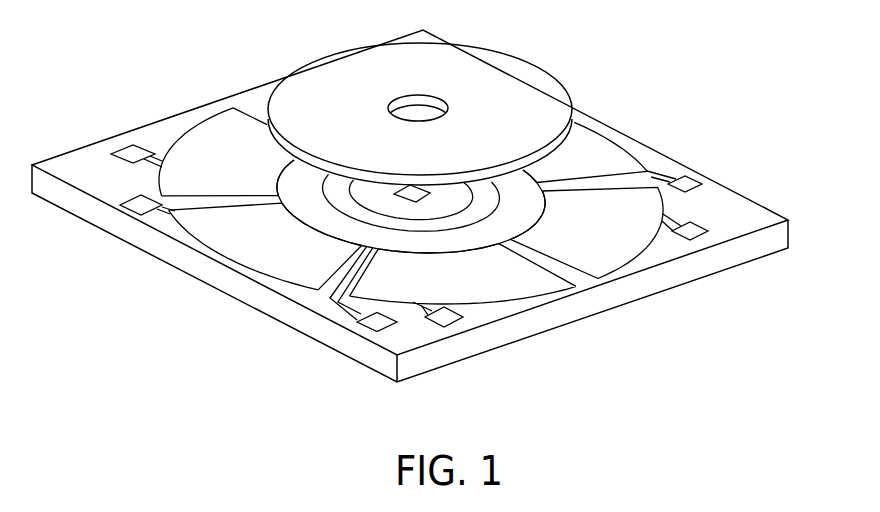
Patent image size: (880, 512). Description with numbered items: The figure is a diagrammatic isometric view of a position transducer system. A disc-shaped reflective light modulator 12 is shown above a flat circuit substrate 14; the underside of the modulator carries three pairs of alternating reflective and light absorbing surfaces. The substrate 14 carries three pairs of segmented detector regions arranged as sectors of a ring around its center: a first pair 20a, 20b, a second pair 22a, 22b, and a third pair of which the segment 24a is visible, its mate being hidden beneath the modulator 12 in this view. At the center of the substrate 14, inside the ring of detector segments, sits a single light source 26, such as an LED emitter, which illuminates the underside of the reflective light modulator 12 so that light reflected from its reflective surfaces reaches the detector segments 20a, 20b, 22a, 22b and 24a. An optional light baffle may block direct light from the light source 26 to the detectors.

The reflective light modulator 12 is at (532, 65).
The circuit substrate 14 is at (792, 237).
The segmented detector region 20a is at (622, 172).
The segmented detector region 20b is at (624, 244).
The segmented detector region 22a is at (528, 287).
The segmented detector region 22b is at (326, 265).
The segmented detector region 24a is at (260, 167).
The light source 26 is at (408, 188).